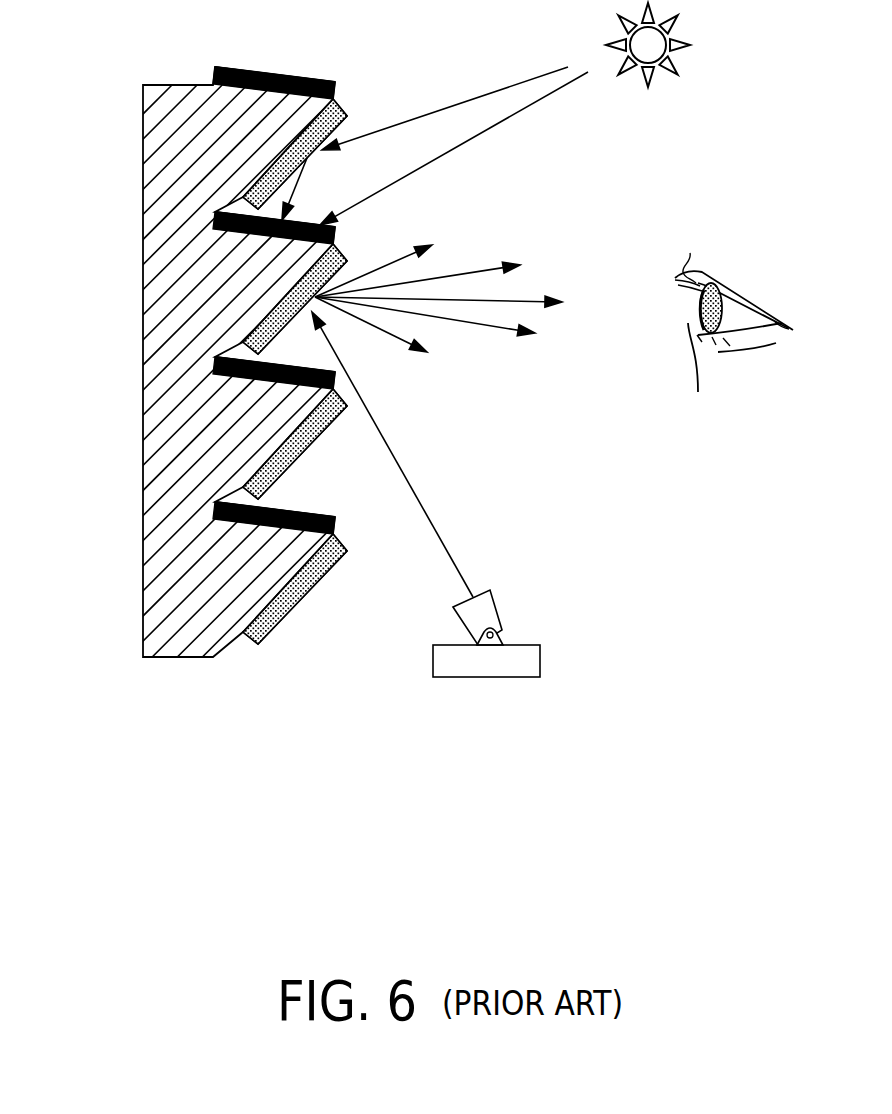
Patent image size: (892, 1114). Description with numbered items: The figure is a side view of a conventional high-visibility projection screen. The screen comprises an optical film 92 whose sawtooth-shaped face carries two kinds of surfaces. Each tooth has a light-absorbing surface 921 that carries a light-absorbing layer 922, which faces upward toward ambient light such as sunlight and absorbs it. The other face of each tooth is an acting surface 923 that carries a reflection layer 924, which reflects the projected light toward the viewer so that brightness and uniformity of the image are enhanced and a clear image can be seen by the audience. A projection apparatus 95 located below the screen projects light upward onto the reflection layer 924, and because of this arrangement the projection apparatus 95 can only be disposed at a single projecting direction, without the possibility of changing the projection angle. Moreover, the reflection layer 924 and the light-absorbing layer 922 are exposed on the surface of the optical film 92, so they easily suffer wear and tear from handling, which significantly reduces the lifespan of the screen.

The optical film 92 is at (185, 533).
The light-absorbing surface 921 is at (295, 80).
The light-absorbing layer 922 is at (270, 73).
The acting surface 923 is at (315, 565).
The reflection layer 924 is at (298, 597).
The projection apparatus 95 is at (482, 615).